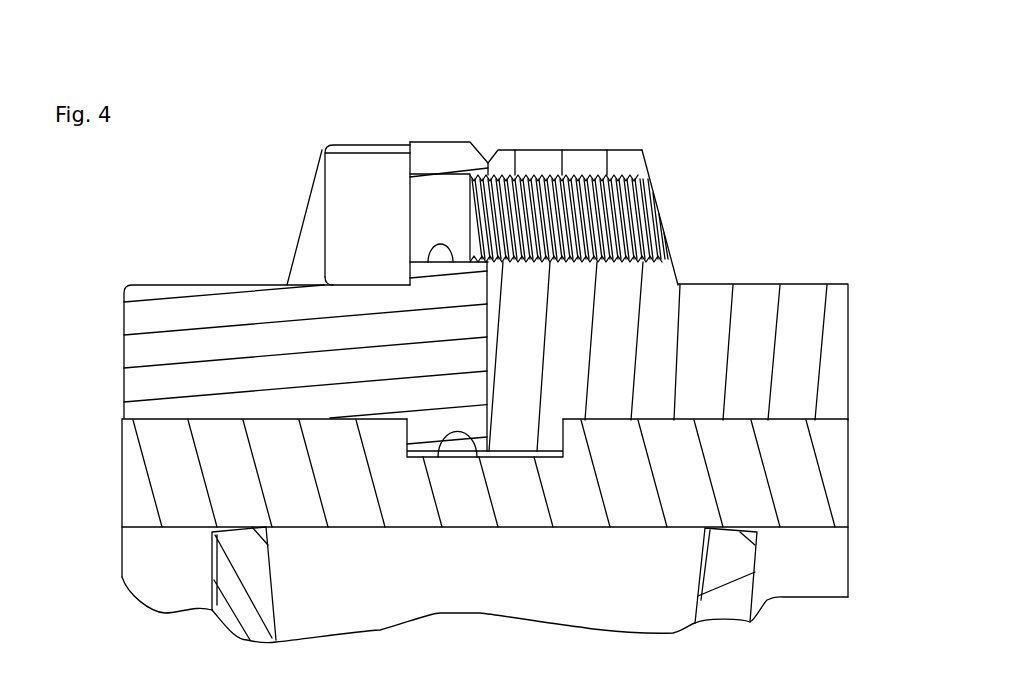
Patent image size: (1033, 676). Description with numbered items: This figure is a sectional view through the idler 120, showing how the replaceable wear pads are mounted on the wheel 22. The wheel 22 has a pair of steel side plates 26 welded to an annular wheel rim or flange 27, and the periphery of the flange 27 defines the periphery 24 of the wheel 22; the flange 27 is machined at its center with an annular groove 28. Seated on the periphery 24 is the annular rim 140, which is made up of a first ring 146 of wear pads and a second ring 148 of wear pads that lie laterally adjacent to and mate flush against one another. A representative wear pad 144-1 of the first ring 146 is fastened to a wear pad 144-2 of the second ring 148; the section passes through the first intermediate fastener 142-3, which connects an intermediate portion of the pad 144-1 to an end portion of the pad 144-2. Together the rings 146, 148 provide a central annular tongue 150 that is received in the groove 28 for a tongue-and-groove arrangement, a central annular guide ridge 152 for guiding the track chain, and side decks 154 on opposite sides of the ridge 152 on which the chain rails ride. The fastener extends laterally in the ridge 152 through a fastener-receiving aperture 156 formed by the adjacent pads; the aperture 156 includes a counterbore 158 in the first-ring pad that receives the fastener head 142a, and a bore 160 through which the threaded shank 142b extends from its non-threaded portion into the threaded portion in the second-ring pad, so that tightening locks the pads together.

The idler 120 is at (226, 160).
The first ring 146 is at (374, 126).
The central annular guide ridge 152 is at (442, 148).
The bore 160 is at (532, 190).
The second ring 148 is at (589, 133).
The head 142a is at (330, 172).
The threaded shank 142b is at (613, 198).
The annular rim 140 is at (752, 208).
The side deck 154 is at (158, 285).
The wear pad 144-1 is at (183, 307).
The wear pad 144-2 is at (670, 278).
The first intermediate fastener 142-3 is at (368, 216).
The counterbore 158 is at (358, 285).
The fastener-receiving aperture 156 is at (428, 262).
The periphery 24 is at (172, 418).
The annular wheel rim or flange 27 is at (130, 469).
The wheel 22 is at (101, 517).
The side plates 26 is at (258, 565).
The annular groove 28 is at (475, 457).
The central annular tongue 150 is at (517, 437).